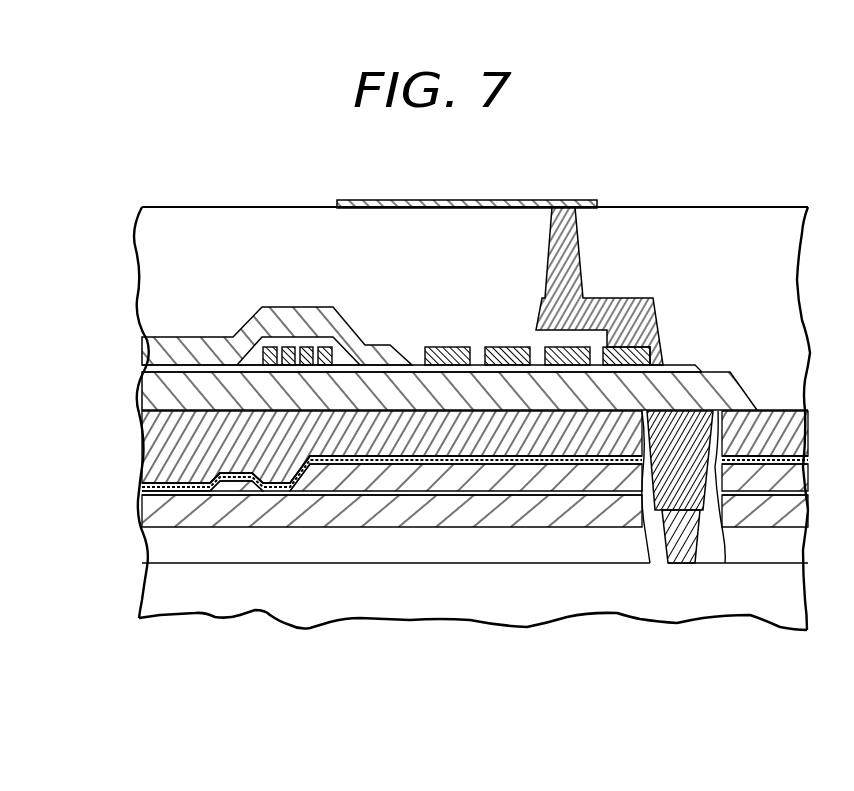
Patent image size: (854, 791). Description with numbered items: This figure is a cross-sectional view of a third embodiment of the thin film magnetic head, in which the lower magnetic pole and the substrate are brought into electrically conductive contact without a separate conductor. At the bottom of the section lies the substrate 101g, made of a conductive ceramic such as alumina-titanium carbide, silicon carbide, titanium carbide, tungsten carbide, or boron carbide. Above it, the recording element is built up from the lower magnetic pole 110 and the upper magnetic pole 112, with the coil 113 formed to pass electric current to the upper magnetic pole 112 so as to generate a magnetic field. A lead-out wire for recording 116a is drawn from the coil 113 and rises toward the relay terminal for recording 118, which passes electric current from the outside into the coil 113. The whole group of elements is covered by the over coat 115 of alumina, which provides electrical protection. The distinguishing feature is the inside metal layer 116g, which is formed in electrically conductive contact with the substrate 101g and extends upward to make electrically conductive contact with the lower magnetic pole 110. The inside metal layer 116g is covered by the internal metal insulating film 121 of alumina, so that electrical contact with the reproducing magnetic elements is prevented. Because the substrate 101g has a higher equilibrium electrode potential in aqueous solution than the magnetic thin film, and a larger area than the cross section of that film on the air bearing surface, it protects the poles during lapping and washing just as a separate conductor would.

The substrate 101g is at (155, 595).
The lower magnetic pole 110 is at (157, 390).
The upper magnetic pole 112 is at (168, 355).
The coil 113 is at (508, 353).
The over coat 115 is at (148, 262).
The lead-out wire for recording 116a is at (582, 262).
The inside metal layer 116g is at (687, 550).
The relay terminal for recording 118 is at (493, 200).
The internal metal insulating film 121 is at (655, 550).